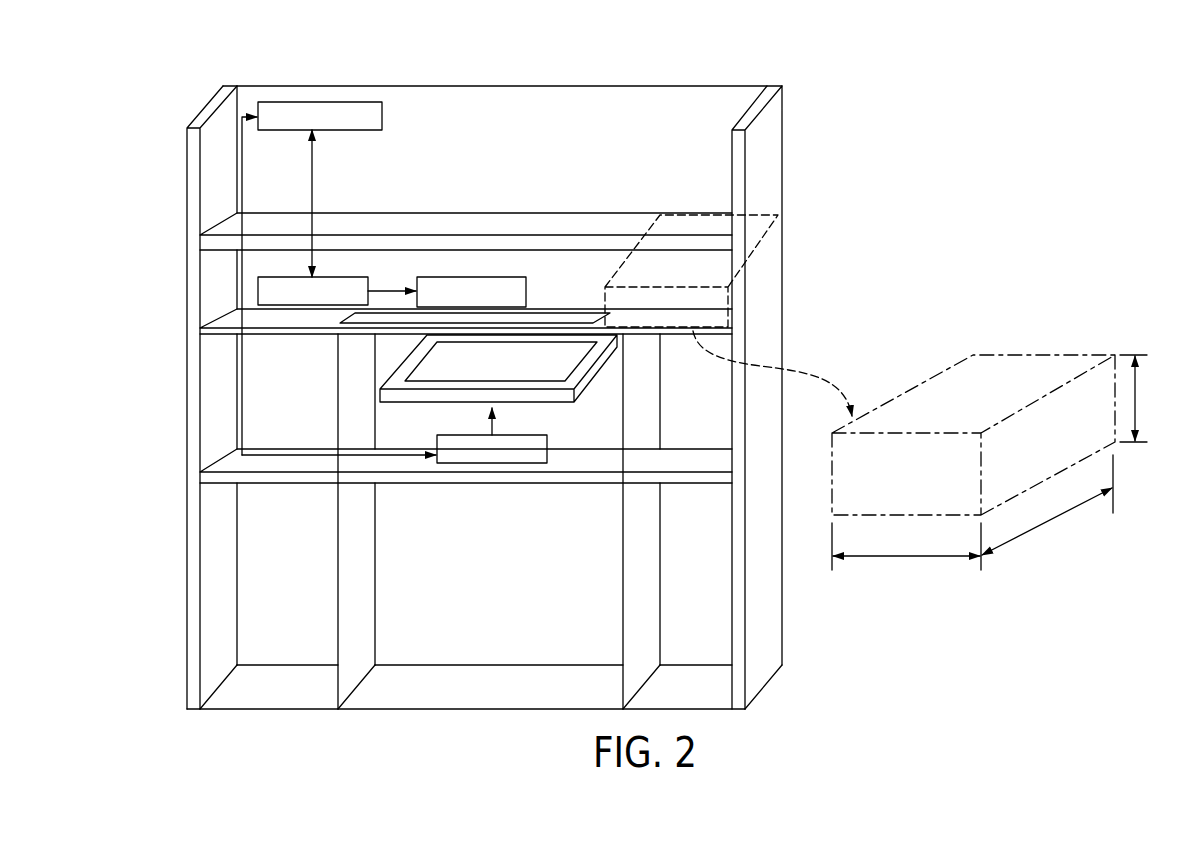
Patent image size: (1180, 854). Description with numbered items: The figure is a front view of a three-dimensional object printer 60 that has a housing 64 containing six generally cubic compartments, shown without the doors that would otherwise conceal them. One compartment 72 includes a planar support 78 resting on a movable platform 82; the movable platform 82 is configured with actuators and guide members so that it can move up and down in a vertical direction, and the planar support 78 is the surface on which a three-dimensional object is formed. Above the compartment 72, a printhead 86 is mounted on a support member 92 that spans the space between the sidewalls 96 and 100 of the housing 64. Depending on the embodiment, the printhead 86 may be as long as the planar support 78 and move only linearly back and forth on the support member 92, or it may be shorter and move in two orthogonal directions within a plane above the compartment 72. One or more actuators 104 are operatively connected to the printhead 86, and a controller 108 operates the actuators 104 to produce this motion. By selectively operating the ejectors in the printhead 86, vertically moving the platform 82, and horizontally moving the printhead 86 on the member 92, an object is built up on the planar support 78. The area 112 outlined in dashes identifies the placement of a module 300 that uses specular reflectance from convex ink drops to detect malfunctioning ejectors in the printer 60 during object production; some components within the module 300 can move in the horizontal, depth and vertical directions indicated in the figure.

The three-dimensional object printer 60 is at (245, 75).
The housing 64 is at (768, 326).
The compartment 72 is at (401, 430).
The planar support 78 is at (512, 376).
The movable platform 82 is at (594, 380).
The printhead 86 is at (526, 283).
The support member 92 is at (277, 334).
The sidewall 96 is at (187, 205).
The sidewall 100 is at (782, 105).
The actuators 104 is at (370, 283).
The controller 108 is at (382, 119).
The area 112 is at (732, 327).
The module 300 is at (990, 352).